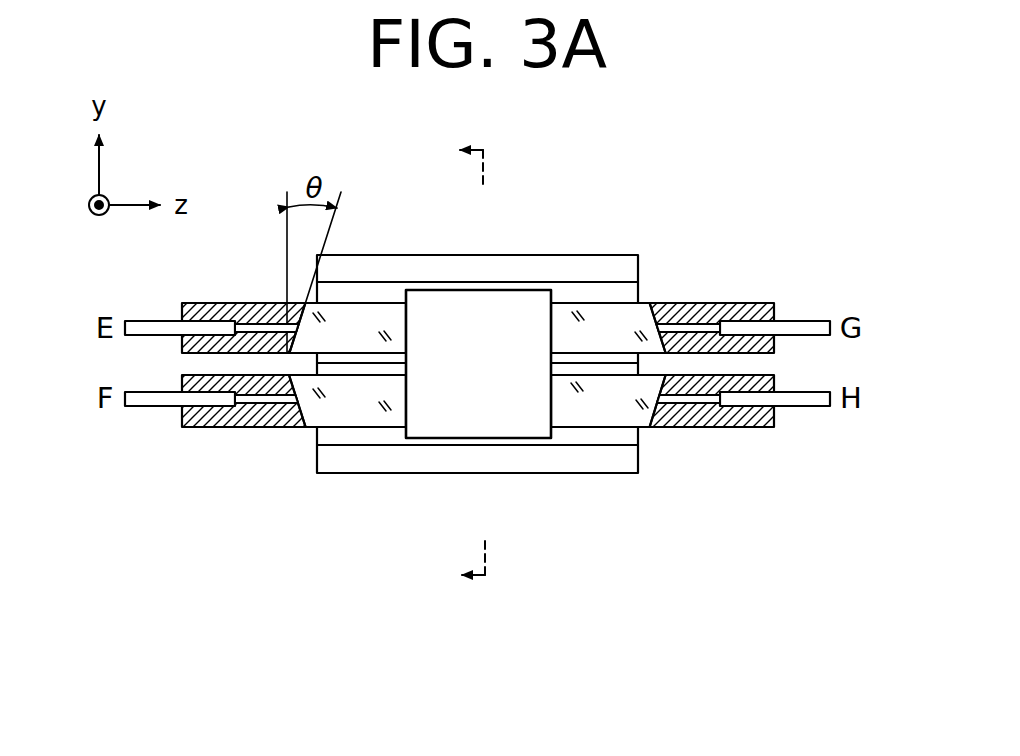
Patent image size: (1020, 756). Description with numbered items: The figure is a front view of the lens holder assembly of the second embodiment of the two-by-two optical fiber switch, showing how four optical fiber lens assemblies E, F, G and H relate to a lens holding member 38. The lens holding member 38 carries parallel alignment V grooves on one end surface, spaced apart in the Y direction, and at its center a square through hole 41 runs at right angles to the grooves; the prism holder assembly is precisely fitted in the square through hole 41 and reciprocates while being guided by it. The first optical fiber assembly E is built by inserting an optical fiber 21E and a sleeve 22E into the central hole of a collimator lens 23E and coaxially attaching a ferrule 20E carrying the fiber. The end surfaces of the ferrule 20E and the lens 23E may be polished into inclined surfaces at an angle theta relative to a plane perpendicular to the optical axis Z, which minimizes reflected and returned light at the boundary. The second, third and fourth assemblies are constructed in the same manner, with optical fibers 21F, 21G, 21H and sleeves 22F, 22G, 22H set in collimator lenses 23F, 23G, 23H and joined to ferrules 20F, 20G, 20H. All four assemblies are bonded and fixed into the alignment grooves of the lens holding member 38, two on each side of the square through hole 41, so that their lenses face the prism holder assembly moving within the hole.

The ferrule 20E is at (196, 312).
The ferrule 20F is at (212, 414).
The ferrule 20G is at (738, 305).
The ferrule 20H is at (731, 414).
The optical fiber 21E is at (253, 325).
The optical fiber 21F is at (259, 405).
The optical fiber 21G is at (687, 327).
The optical fiber 21H is at (690, 402).
The sleeve 22E is at (165, 321).
The sleeve 22F is at (170, 407).
The sleeve 22G is at (787, 322).
The sleeve 22H is at (784, 406).
The collimator lens 23E is at (372, 315).
The collimator lens 23F is at (372, 408).
The collimator lens 23G is at (588, 312).
The collimator lens 23H is at (588, 405).
The lens holding member 38 is at (520, 255).
The square through hole 41 is at (494, 438).